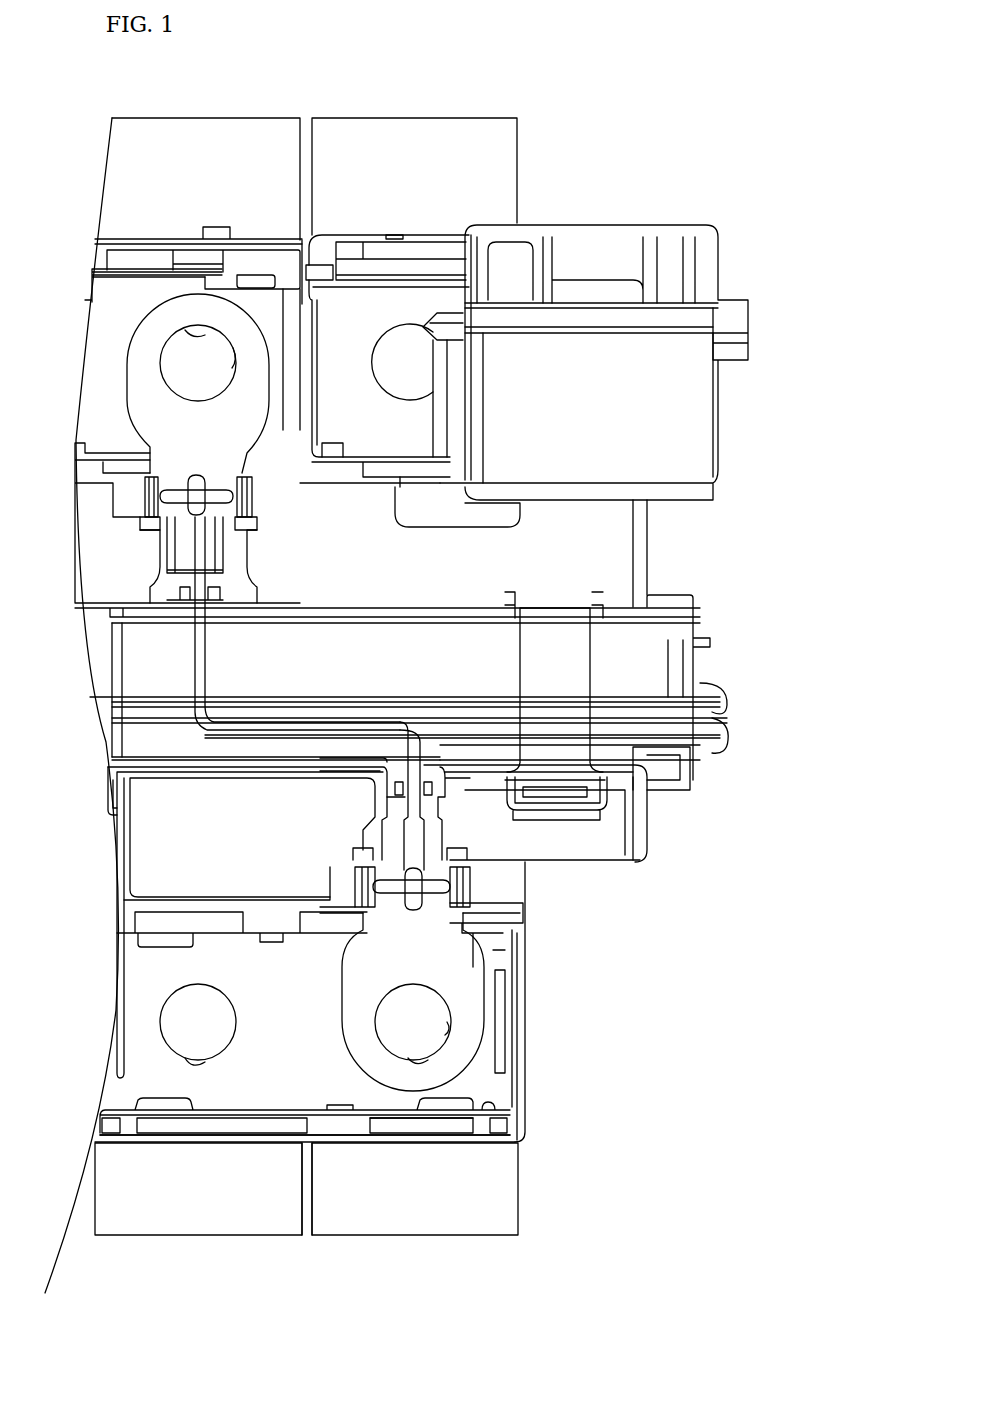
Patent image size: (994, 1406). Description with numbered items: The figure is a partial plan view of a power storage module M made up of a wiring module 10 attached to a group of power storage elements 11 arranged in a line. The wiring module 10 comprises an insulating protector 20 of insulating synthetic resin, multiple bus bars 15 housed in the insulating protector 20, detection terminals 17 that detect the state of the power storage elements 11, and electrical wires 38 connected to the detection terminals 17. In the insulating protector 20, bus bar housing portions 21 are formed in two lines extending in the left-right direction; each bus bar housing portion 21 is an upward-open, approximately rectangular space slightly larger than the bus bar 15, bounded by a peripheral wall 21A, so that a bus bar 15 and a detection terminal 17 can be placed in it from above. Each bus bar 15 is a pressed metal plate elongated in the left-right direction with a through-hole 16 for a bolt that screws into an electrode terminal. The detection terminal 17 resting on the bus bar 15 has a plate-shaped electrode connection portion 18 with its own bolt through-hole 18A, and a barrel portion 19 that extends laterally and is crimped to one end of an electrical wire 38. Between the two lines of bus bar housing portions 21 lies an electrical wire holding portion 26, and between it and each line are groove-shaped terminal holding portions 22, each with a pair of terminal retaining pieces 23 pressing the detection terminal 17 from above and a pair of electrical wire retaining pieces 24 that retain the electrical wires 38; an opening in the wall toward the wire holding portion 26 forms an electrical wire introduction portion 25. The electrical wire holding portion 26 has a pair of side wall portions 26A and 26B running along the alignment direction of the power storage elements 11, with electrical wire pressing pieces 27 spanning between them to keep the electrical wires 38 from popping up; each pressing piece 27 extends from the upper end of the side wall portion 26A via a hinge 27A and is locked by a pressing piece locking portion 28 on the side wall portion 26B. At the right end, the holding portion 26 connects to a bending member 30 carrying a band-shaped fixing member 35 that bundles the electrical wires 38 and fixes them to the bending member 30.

The power storage module M is at (496, 104).
The wiring module 10 is at (713, 232).
The power storage element 11 is at (262, 1237).
The bus bar 15 is at (90, 300).
The through-hole 16 is at (185, 330).
The detection terminal 17 is at (203, 298).
The electrode connection portion 18 is at (402, 362).
The through-hole 18A is at (233, 348).
The barrel portion 19 is at (436, 820).
The insulating protector 20 is at (648, 823).
The bus bar housing portion 21 is at (484, 1116).
The peripheral wall 21A is at (440, 1118).
The terminal holding portion 22 is at (412, 838).
The terminal retaining piece 23 is at (233, 498).
The electrical wire retaining piece 24 is at (197, 603).
The electrical wire introduction portion 25 is at (400, 764).
The electrical wire holding portion 26 is at (240, 734).
The side wall portion 26A is at (523, 608).
The side wall portion 26B is at (648, 755).
The electrical wire pressing piece 27 is at (575, 640).
The hinge 27A is at (577, 608).
The pressing piece locking portion 28 is at (607, 793).
The bending member 30 is at (697, 668).
The fixing member 35 is at (730, 722).
The electrical wire 38 is at (716, 716).